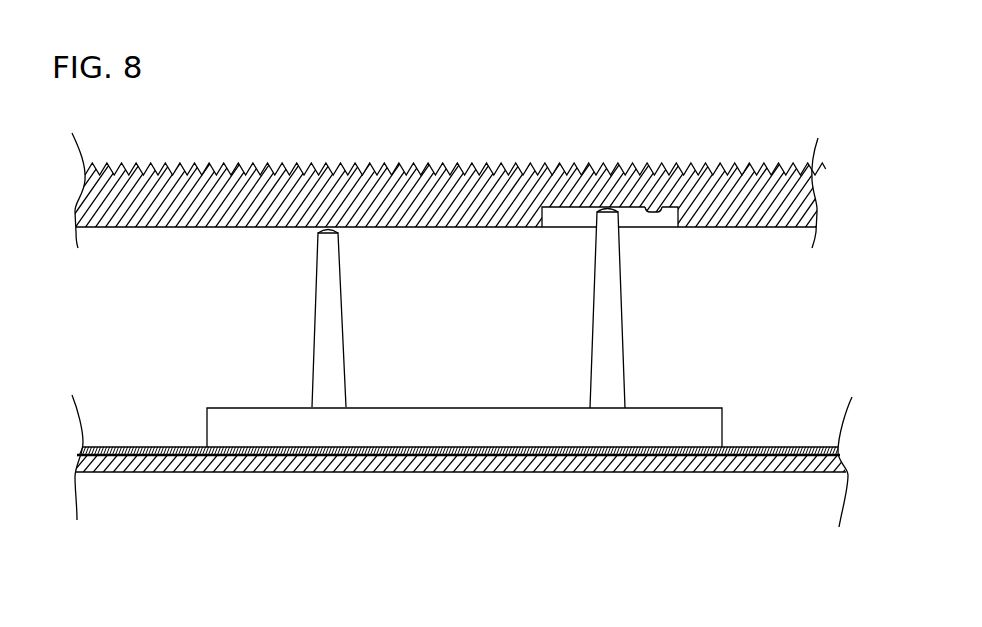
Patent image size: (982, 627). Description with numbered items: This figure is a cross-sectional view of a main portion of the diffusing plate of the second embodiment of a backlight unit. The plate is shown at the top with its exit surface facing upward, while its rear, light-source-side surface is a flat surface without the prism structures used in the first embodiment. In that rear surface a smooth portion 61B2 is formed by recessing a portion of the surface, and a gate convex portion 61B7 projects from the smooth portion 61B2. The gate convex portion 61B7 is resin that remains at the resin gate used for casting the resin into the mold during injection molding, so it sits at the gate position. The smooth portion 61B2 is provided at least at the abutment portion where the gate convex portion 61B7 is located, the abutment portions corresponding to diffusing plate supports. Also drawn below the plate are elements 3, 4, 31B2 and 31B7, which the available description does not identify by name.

The substrate 3 is at (390, 465).
The thin film layer 4 is at (153, 445).
The column spacer 31B2 is at (603, 345).
The column spacer 31B7 is at (327, 345).
The smooth portion 61B2 is at (580, 212).
The gate convex portion 61B7 is at (657, 212).